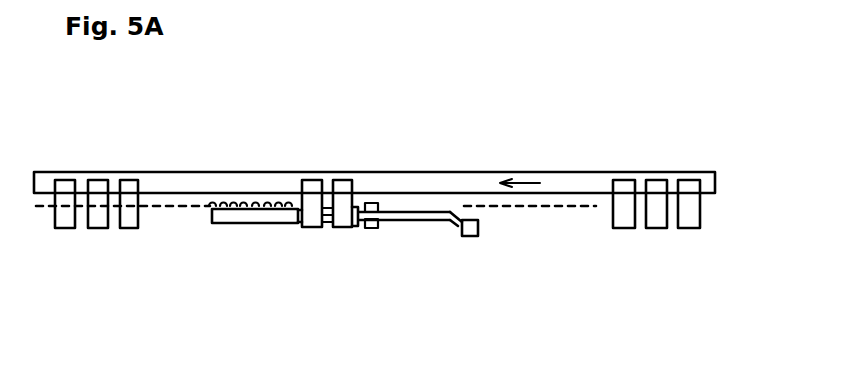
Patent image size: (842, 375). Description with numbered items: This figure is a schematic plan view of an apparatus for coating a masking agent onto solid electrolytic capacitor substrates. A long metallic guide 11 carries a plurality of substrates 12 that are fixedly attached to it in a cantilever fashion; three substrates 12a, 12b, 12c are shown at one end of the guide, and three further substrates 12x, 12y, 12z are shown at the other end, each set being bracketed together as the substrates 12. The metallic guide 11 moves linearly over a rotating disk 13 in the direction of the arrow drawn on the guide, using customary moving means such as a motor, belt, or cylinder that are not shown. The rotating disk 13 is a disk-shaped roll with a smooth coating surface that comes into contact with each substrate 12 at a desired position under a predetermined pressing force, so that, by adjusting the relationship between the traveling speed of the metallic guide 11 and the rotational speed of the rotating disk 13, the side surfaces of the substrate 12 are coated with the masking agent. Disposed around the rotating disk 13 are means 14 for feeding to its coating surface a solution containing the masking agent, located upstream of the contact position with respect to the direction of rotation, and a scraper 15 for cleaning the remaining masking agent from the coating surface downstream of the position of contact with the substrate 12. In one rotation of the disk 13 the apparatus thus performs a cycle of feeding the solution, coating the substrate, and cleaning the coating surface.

The metallic guide 11 is at (284, 183).
The substrate 12 is at (167, 300).
The substrate 12a is at (687, 228).
The substrate 12b is at (655, 228).
The substrate 12c is at (623, 228).
The peg 12x is at (128, 228).
The peg 12y is at (95, 228).
The peg 12z is at (65, 228).
The rotating disk 13 is at (430, 221).
The means for feeding a solution containing the masking agent 14 is at (468, 237).
The scraper 15 is at (240, 225).